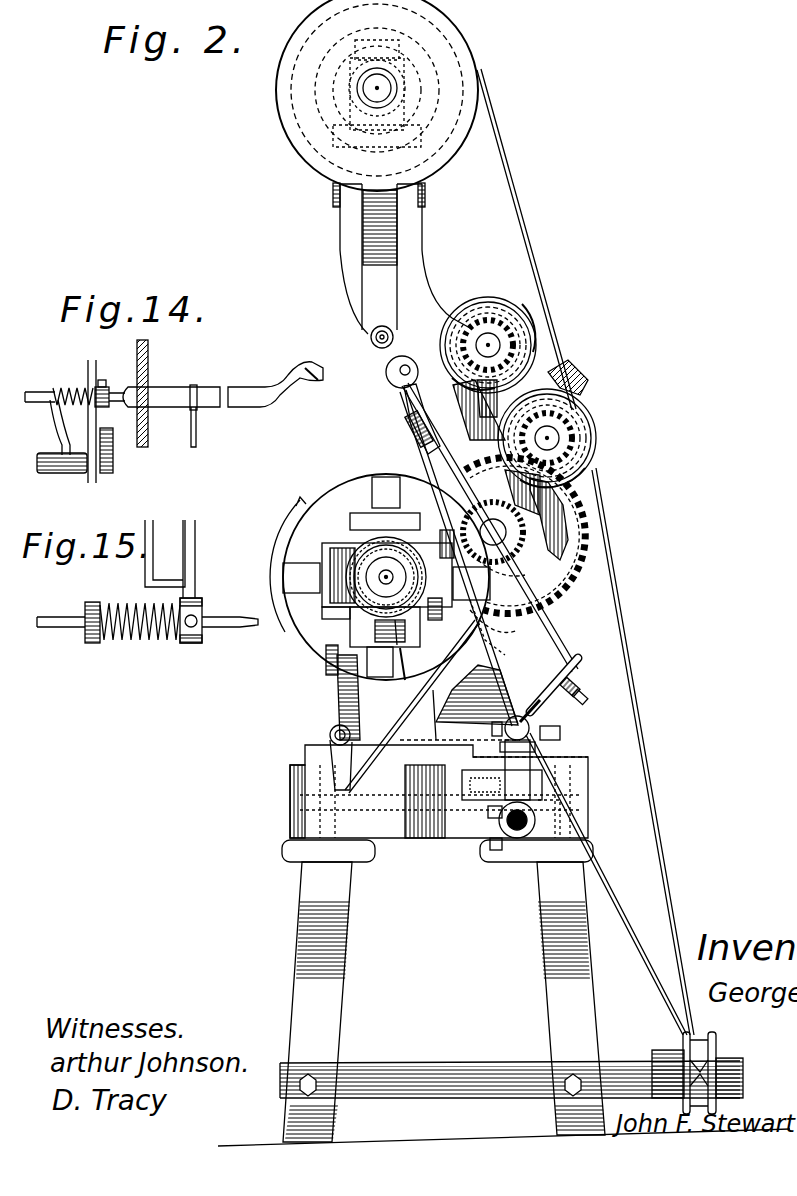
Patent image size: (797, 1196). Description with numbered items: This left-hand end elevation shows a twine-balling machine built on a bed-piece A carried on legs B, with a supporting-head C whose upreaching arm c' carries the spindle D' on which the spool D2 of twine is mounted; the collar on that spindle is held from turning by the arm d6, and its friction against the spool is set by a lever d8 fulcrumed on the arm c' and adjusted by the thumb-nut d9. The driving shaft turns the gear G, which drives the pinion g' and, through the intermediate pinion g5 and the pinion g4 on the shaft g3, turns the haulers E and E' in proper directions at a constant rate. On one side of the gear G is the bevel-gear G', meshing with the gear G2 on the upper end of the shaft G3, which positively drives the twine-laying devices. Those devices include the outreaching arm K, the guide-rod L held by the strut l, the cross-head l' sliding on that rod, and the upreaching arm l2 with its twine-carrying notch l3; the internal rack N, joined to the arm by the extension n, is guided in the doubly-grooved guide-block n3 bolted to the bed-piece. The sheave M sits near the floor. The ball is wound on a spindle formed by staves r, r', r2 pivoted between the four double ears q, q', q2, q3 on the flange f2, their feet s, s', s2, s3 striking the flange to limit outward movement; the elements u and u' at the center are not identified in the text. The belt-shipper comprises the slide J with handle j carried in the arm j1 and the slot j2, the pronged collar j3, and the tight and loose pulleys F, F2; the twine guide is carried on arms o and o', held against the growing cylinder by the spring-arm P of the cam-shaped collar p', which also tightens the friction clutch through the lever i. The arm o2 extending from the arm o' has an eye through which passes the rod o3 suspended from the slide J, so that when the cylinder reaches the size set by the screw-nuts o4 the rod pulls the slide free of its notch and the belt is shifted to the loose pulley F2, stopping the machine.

In FIG. 2, the spindle D' is at (395, 88).
In FIG. 2, the spool D2 is at (478, 84).
In FIG. 2, the arm d6 is at (333, 190).
In FIG. 2, the upreaching arm c' is at (405, 259).
In FIG. 14, the upreaching arm c' is at (153, 393).
In FIG. 2, the lever d8 is at (399, 292).
In FIG. 2, the thumb-nut d9 is at (395, 336).
In FIG. 2, the hauler E is at (488, 333).
In FIG. 2, the pinion g4 is at (523, 318).
In FIG. 2, the intermediate pinion g5 is at (552, 370).
In FIG. 2, the shaft g3 is at (452, 374).
In FIG. 2, the hauler E' is at (561, 438).
In FIG. 2, the pinion g' is at (569, 475).
In FIG. 2, the handle j is at (386, 374).
In FIG. 14, the handle j is at (310, 381).
In FIG. 2, the slide J is at (404, 412).
In FIG. 14, the slide J is at (240, 408).
In FIG. 15, the slide J is at (238, 628).
In FIG. 2, the arm o is at (490, 527).
In FIG. 2, the arm o' is at (459, 558).
In FIG. 2, the gear G is at (529, 536).
In FIG. 2, the bevel-gear G' is at (506, 535).
In FIG. 2, the gear G2 is at (512, 574).
In FIG. 2, the shaft G3 is at (512, 632).
In FIG. 2, the flange f2 is at (292, 640).
In FIG. 2, the foot s' is at (386, 492).
In FIG. 2, the foot s is at (301, 578).
In FIG. 2, the foot s2 is at (489, 584).
In FIG. 2, the foot s3 is at (378, 680).
In FIG. 2, the stave r' is at (387, 580).
In FIG. 2, the double ear q' is at (336, 558).
In FIG. 2, the twine-carrying notch l3 is at (446, 530).
In FIG. 2, the spring coil u is at (386, 577).
In FIG. 2, the spring center u' is at (386, 572).
In FIG. 2, the stave r is at (336, 614).
In FIG. 2, the stave r2 is at (390, 634).
In FIG. 2, the cross-head l' is at (393, 632).
In FIG. 2, the double ear q is at (435, 617).
In FIG. 2, the upreaching arm l2 is at (480, 642).
In FIG. 2, the double ear q2 is at (404, 680).
In FIG. 2, the double ear q3 is at (336, 658).
In FIG. 2, the collar p' is at (412, 706).
In FIG. 2, the lever i is at (338, 708).
In FIG. 2, the rod o3 is at (552, 668).
In FIG. 14, the rod o3 is at (201, 433).
In FIG. 2, the screw-nuts o4 is at (578, 688).
In FIG. 2, the arm o2 is at (542, 700).
In FIG. 2, the supporting-head C is at (494, 723).
In FIG. 2, the guide-rod L is at (530, 726).
In FIG. 2, the spring-arm P is at (334, 760).
In FIG. 2, the bed-piece A is at (437, 803).
In FIG. 2, the internal rack N is at (470, 780).
In FIG. 2, the extension n is at (480, 792).
In FIG. 2, the doubly-grooved guide-block n3 is at (488, 814).
In FIG. 2, the strut l is at (549, 819).
In FIG. 2, the arm K is at (518, 838).
In FIG. 2, the legs B is at (504, 1004).
In FIG. 2, the sheave M is at (684, 1044).
In FIG. 14, the arm j1 is at (52, 408).
In FIG. 15, the arm j1 is at (86, 632).
In FIG. 14, the slot j2 is at (118, 404).
In FIG. 14, the collar j3 is at (106, 388).
In FIG. 15, the collar j3 is at (191, 643).
In FIG. 14, the tight pulley F is at (96, 430).
In FIG. 14, the loose pulley F2 is at (113, 458).